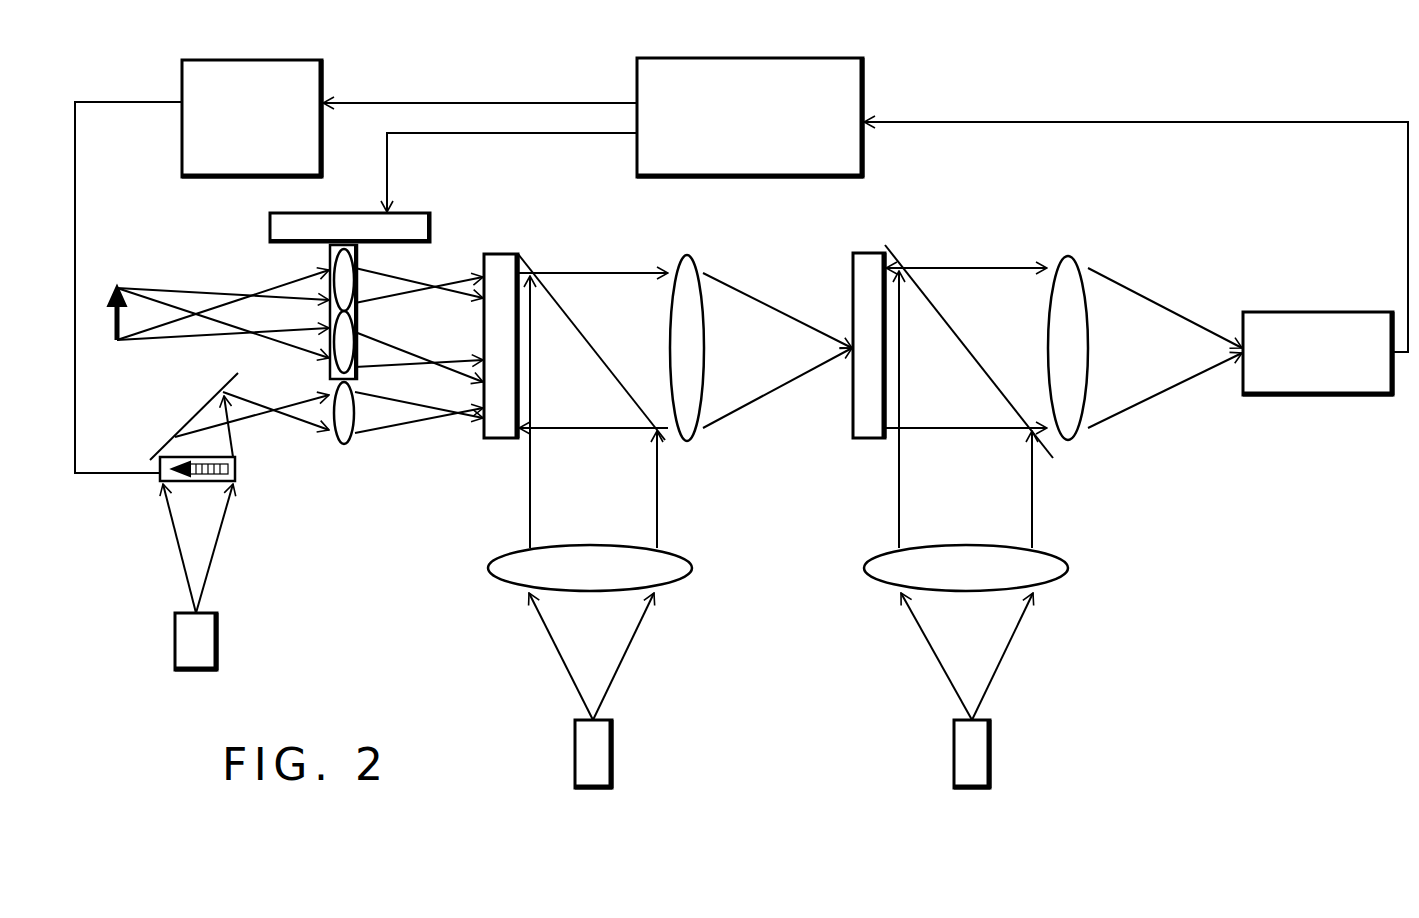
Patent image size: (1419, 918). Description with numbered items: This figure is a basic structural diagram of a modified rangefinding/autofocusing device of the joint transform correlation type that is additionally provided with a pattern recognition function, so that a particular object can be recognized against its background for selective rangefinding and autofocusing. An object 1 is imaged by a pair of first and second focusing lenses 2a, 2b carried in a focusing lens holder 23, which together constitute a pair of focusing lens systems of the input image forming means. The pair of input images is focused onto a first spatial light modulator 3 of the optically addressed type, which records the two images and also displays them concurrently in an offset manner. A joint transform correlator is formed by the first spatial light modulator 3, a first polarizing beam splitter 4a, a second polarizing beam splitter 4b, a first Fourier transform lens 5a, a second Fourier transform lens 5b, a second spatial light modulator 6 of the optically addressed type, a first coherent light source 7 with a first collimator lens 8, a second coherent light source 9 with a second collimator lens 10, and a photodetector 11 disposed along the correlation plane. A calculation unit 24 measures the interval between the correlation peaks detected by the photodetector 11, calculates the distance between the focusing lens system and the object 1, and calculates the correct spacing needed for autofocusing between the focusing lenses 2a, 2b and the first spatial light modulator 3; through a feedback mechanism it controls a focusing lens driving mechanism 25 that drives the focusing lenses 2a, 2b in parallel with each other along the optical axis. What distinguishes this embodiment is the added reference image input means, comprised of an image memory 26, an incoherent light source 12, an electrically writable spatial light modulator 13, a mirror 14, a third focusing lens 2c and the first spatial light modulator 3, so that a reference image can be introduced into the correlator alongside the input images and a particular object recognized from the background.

The object 1 is at (114, 287).
The first focusing lens 2a is at (360, 290).
The second focusing lens 2b is at (360, 352).
The third focusing lens 2c is at (348, 445).
The first spatial light modulator 3 is at (502, 254).
The first polarizing beam splitter 4a is at (598, 350).
The second polarizing beam splitter 4b is at (968, 350).
The first Fourier transform lens 5a is at (690, 255).
The second Fourier transform lens 5b is at (1075, 257).
The second spatial light modulator 6 is at (866, 253).
The first coherent light source 7 is at (612, 742).
The first collimator lens 8 is at (692, 566).
The second coherent light source 9 is at (990, 742).
The second collimator lens 10 is at (1069, 566).
The photodetector 11 is at (1325, 312).
The incoherent light source 12 is at (217, 635).
The electrically writable spatial light modulator 13 is at (237, 470).
The mirror 14 is at (193, 415).
The focusing lens holder 23 is at (330, 372).
The calculation unit 24 is at (636, 83).
The focusing lens driving mechanism 25 is at (270, 232).
The image memory 26 is at (181, 82).